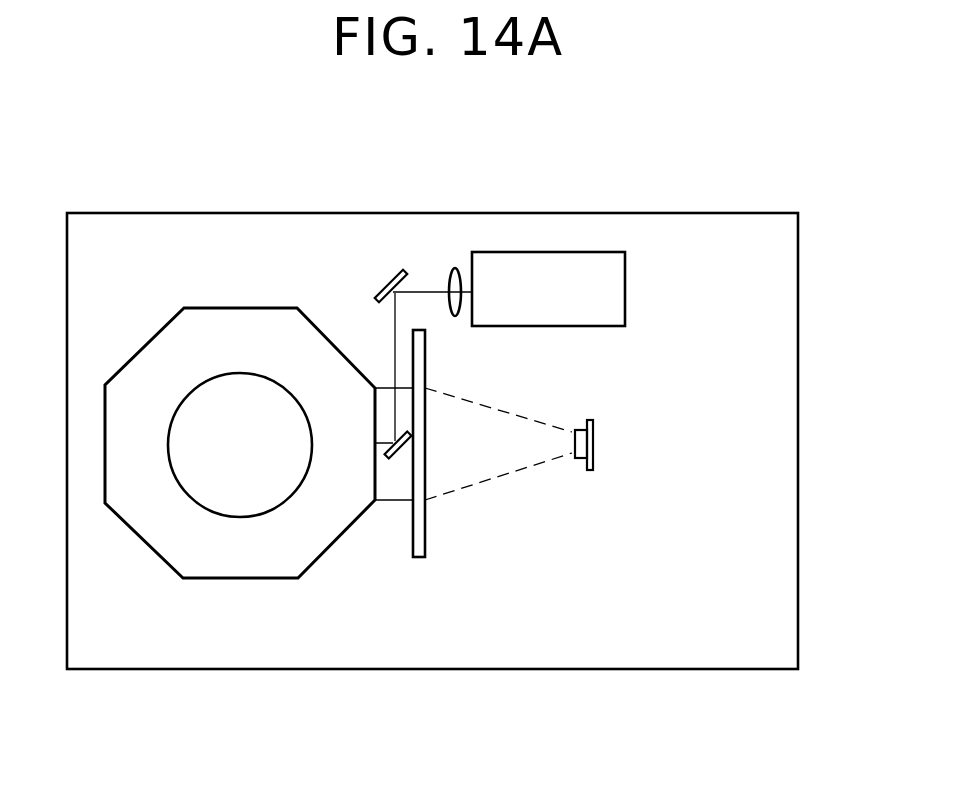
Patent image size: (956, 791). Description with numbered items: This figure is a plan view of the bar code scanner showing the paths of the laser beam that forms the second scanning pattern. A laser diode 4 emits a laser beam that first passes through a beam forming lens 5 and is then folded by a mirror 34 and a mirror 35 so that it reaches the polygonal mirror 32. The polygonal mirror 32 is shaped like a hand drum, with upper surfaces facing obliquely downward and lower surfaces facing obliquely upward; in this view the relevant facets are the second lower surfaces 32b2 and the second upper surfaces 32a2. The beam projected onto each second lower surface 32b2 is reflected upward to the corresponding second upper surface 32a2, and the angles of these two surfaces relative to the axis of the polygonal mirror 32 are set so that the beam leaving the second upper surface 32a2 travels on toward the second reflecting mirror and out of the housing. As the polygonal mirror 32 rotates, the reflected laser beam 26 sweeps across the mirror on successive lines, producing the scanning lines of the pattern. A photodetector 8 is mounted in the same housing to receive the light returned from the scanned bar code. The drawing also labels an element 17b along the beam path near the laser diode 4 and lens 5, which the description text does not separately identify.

The laser diode 4 is at (558, 267).
The beam forming lens 5 is at (453, 309).
The laser beam 17b is at (432, 291).
The mirror 34 is at (390, 281).
The mirror 35 is at (399, 460).
The polygonal mirror 32 is at (263, 555).
The second upper surfaces 32a2 is at (371, 469).
The second lower surfaces 32b2 is at (367, 568).
The laser beam 26 is at (427, 548).
The photodetector 8 is at (595, 446).